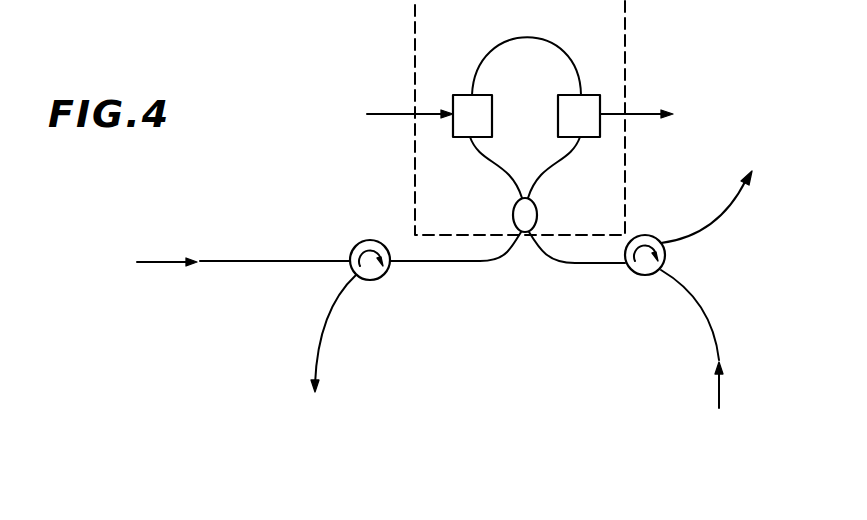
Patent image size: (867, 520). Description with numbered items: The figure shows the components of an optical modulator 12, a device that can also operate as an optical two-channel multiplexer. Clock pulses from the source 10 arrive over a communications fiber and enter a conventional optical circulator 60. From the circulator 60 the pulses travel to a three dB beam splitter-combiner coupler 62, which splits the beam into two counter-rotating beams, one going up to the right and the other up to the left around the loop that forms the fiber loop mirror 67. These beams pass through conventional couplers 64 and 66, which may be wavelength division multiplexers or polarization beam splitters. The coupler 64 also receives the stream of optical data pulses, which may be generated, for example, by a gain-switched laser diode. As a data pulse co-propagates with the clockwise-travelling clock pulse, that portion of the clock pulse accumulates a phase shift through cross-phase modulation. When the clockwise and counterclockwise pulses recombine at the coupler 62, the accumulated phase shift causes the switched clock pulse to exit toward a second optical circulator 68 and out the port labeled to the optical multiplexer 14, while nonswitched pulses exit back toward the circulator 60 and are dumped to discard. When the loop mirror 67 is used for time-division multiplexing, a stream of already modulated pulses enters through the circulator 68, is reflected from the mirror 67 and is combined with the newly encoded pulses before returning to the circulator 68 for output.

The source 10 is at (197, 252).
The optical modulator 12 is at (522, 353).
The optical multiplexer 14 is at (720, 178).
The optical circulator 60 is at (374, 240).
The 3 dB beam splitter-combiner coupler 62 is at (537, 214).
The coupler 64 is at (484, 91).
The coupler 66 is at (592, 93).
The fiber loop mirror 67 is at (436, 45).
The optical circulator 68 is at (645, 276).